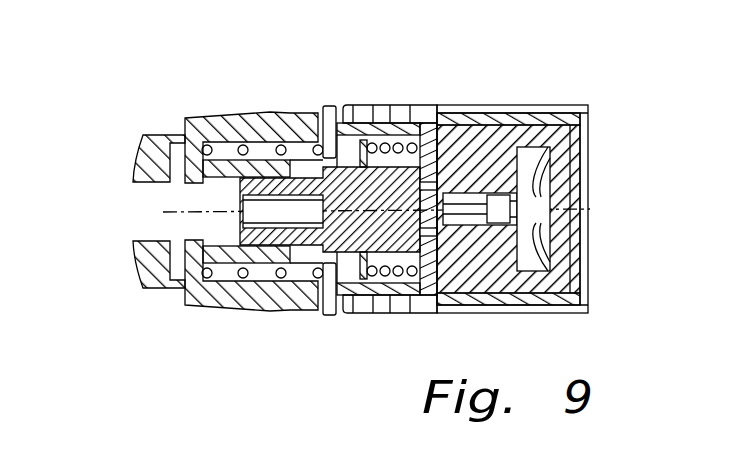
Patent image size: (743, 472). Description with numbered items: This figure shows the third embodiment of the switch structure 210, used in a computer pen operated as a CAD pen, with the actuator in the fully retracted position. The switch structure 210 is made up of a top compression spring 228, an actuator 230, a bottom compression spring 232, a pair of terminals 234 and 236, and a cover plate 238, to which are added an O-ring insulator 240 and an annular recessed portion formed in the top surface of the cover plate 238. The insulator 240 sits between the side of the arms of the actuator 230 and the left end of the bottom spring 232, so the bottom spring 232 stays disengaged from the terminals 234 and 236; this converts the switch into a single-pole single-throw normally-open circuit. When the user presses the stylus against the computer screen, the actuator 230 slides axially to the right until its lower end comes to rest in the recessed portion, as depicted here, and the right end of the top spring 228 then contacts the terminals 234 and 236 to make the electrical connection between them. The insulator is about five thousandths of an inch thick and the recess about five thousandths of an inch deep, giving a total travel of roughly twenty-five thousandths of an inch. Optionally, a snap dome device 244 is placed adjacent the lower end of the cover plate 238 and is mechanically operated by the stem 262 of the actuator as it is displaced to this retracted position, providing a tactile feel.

The switch structure 210 is at (100, 41).
The top compression spring 228 is at (205, 118).
The actuator 230 is at (418, 230).
The bottom compression spring 232 is at (383, 280).
The terminal 234 is at (322, 100).
The terminal 236 is at (330, 317).
The cover plate 238 is at (428, 130).
The O-ring insulator 240 is at (350, 107).
The snap dome device 244 is at (538, 208).
The stem 262 is at (447, 203).